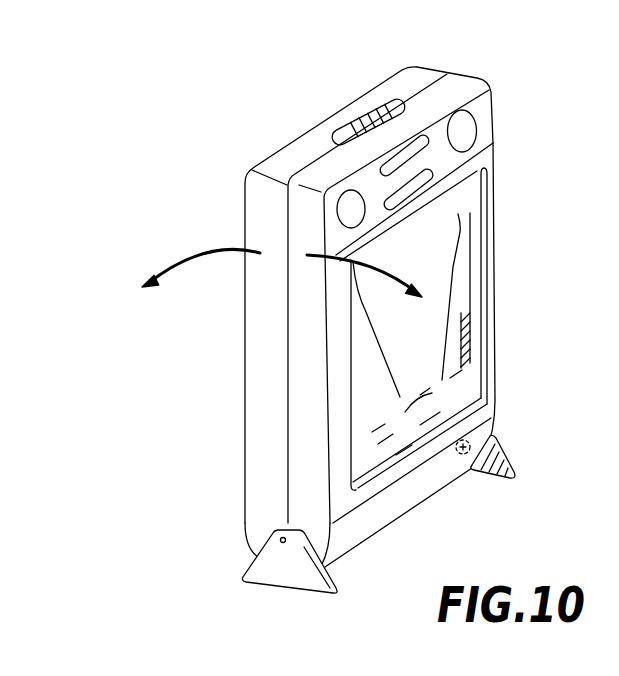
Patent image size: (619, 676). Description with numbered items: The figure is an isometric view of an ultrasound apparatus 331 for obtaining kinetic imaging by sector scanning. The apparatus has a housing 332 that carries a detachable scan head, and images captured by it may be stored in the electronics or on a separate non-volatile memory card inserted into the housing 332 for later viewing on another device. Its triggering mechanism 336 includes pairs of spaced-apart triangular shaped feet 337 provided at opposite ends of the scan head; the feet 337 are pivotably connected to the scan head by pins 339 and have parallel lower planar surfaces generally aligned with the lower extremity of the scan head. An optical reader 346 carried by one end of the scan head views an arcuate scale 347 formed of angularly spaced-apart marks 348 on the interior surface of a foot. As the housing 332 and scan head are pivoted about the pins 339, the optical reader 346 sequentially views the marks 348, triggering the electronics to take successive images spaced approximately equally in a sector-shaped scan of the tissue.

The ultrasound apparatus 331 is at (308, 99).
The housing 332 is at (256, 354).
The triggering mechanism 336 is at (237, 564).
The triangular shaped feet 337 is at (283, 573).
The pins 339 is at (280, 539).
The optical reader 346 is at (500, 437).
The arcuate scale 347 is at (534, 463).
The marks 348 is at (467, 469).